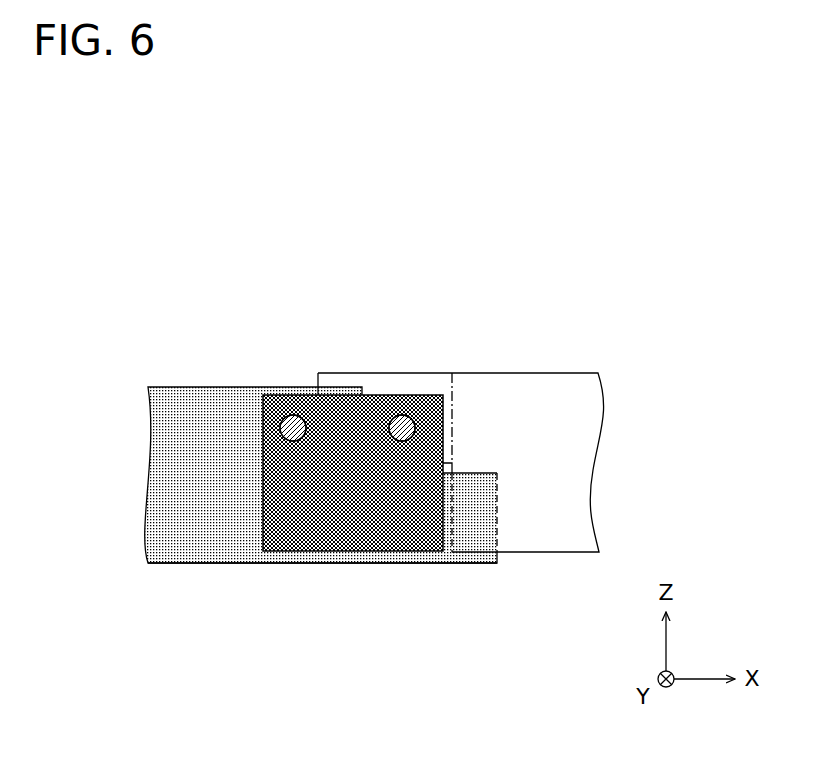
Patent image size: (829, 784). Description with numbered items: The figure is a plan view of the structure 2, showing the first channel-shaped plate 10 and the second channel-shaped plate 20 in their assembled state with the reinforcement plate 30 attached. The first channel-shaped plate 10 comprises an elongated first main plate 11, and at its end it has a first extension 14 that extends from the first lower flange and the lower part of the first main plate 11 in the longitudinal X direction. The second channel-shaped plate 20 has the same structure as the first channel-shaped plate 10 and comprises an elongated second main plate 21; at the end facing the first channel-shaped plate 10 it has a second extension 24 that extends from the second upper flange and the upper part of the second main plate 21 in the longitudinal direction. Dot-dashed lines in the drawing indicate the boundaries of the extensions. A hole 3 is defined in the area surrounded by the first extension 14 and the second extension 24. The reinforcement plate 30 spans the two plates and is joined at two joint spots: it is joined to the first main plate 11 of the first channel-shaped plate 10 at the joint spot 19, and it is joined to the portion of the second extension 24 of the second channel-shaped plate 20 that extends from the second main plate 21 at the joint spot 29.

The structure 2 is at (147, 223).
The hole 3 is at (390, 475).
The first channel-shaped plate 10 is at (190, 375).
The first main plate 11 is at (143, 522).
The first extension 14 is at (495, 572).
The joint spot 19 is at (291, 414).
The second channel-shaped plate 20 is at (568, 362).
The second main plate 21 is at (598, 434).
The second extension 24 is at (451, 368).
The joint spot 29 is at (413, 423).
The reinforcement plate 30 is at (250, 542).